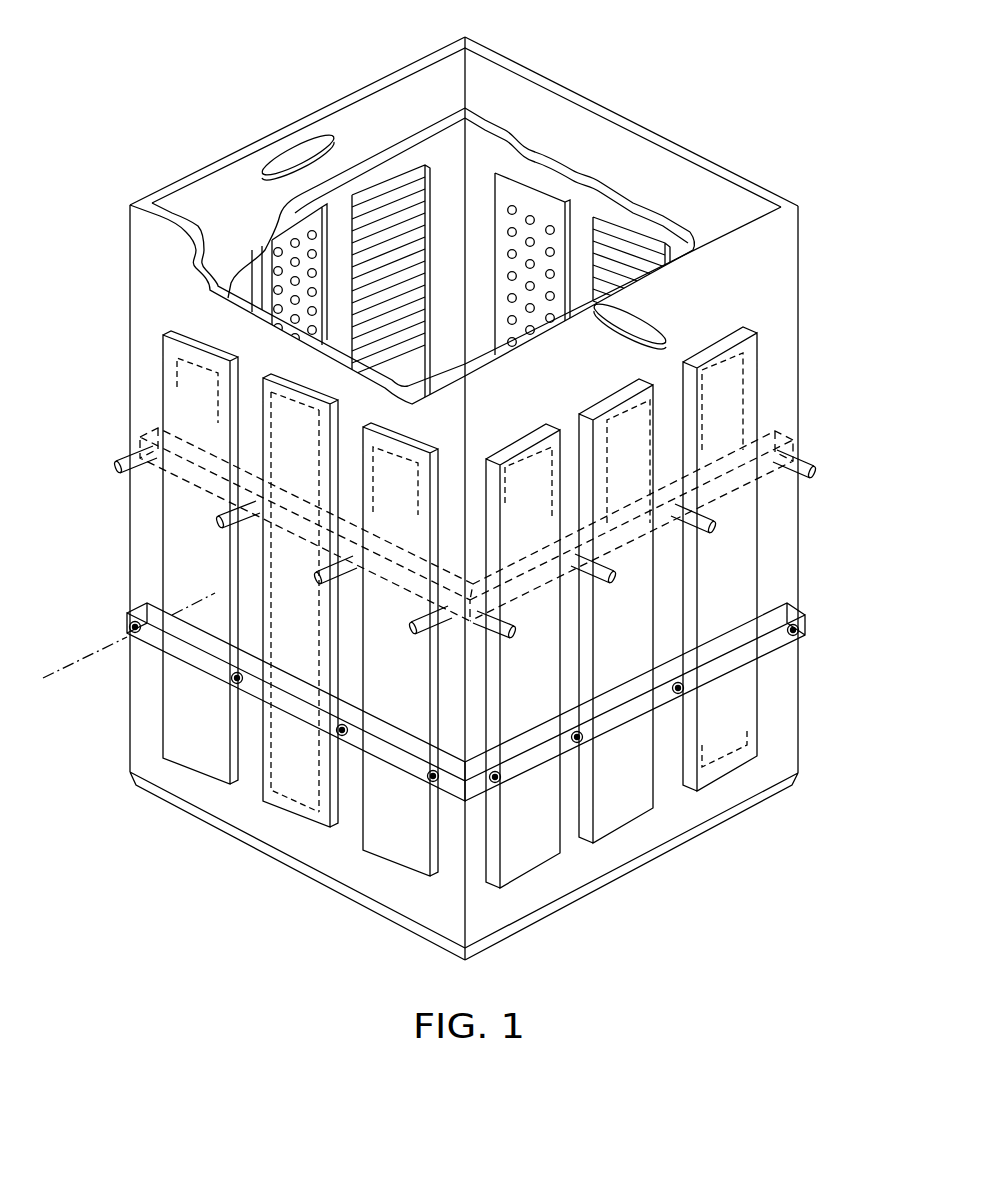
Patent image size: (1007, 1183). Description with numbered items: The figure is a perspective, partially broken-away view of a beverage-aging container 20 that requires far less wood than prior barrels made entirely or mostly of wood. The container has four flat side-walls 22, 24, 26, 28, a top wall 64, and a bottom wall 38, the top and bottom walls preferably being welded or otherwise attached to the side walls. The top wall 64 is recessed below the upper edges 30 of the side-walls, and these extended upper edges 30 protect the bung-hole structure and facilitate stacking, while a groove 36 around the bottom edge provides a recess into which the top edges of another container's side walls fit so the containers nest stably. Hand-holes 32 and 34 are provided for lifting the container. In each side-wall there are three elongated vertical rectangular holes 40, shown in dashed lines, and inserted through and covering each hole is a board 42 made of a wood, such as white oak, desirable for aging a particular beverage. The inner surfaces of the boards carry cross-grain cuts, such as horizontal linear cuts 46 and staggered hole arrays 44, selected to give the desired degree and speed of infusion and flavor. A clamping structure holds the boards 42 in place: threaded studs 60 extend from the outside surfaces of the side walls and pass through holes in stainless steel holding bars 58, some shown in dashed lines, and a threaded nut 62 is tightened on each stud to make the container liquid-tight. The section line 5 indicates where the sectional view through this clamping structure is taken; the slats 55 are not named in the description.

The section line 5- 5 is at (70, 664).
The container 20 is at (668, 124).
The side-wall 22 is at (600, 130).
The side-wall 24 is at (396, 100).
The side-wall 26 is at (150, 287).
The side-wall 28 is at (760, 258).
The upper edges 30 is at (748, 175).
The hand-hole 32 is at (318, 138).
The hand-hole 34 is at (667, 308).
The groove 36 is at (133, 777).
The bottom wall 38 is at (657, 853).
The elongated vertical rectangular holes 40 is at (200, 357).
The board 42 is at (300, 218).
The hole array 44 is at (273, 241).
The horizontal linear cuts 46 is at (428, 197).
The slat 55 is at (172, 352).
The holding bars 58 is at (200, 495).
The threaded studs 60 is at (230, 507).
The threaded nut 62 is at (128, 625).
The top wall 64 is at (497, 128).